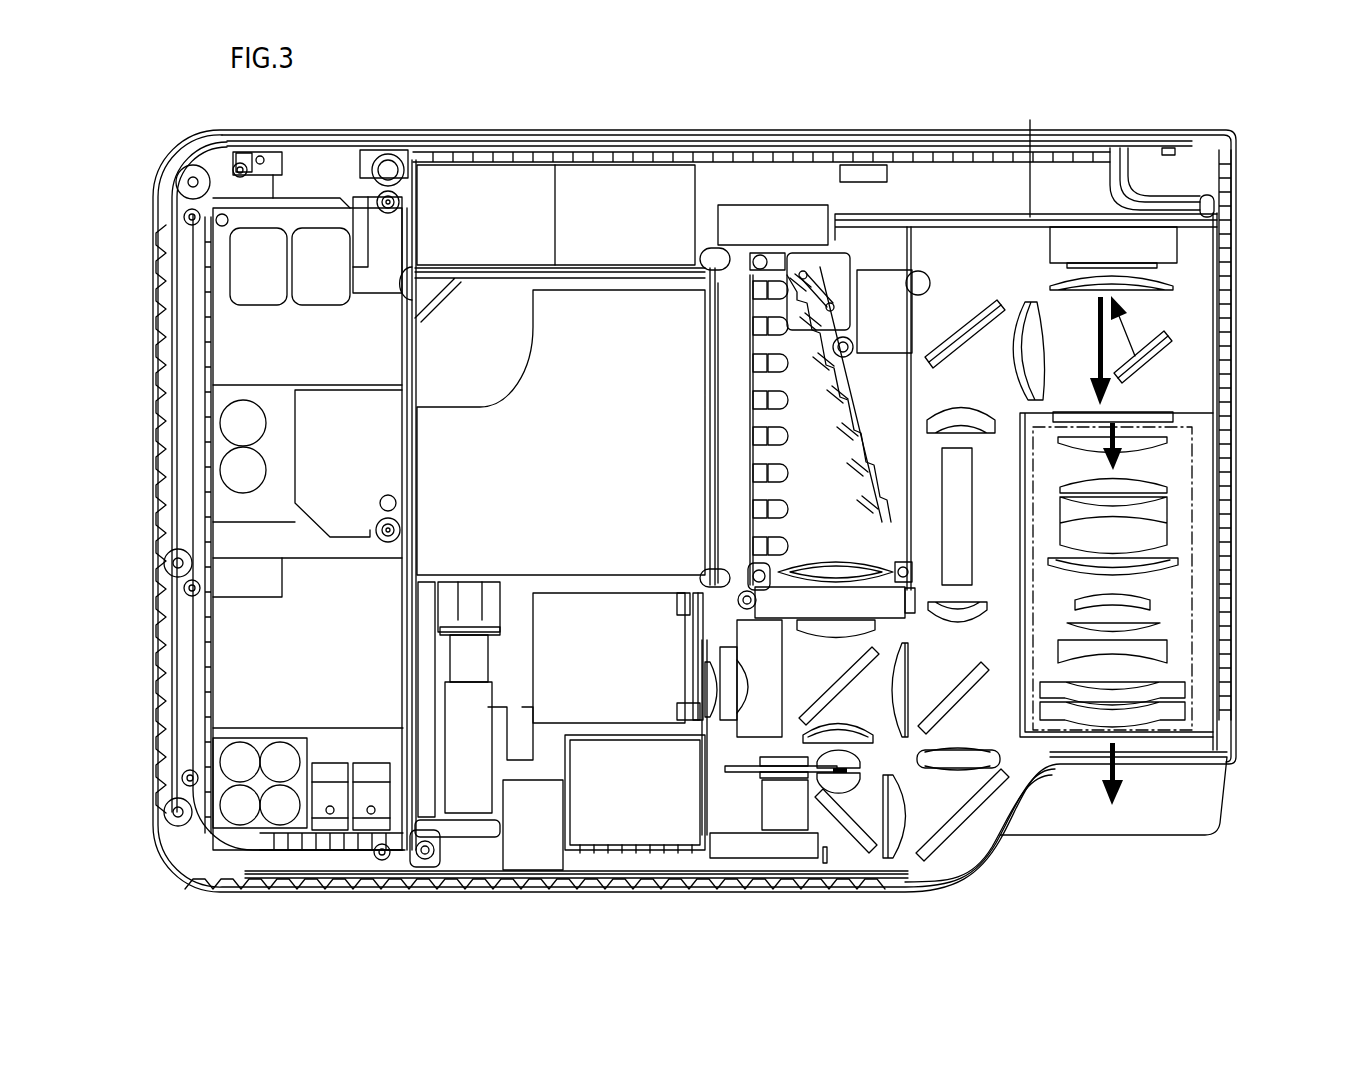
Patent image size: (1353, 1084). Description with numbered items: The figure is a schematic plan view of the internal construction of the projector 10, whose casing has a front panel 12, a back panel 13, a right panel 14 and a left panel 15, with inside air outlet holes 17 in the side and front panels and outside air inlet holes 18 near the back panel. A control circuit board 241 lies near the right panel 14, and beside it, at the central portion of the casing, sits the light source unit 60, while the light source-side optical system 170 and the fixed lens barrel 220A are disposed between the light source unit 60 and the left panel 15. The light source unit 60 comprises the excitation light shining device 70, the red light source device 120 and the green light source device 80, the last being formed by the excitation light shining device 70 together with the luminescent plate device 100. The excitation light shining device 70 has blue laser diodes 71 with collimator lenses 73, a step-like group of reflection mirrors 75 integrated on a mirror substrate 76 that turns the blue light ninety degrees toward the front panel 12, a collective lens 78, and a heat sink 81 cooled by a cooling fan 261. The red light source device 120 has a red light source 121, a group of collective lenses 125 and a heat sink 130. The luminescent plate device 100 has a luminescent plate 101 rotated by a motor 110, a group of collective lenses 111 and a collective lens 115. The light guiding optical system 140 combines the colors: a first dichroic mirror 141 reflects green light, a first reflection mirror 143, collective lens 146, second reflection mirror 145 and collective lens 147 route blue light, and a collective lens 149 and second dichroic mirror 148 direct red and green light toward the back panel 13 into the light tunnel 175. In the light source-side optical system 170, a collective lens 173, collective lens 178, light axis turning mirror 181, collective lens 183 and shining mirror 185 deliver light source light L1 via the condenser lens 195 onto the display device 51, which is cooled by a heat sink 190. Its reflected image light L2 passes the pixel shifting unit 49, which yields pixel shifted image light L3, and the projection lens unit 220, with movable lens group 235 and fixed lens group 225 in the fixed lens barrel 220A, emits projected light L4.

The projector 10 is at (1248, 115).
The front panel 12 is at (322, 893).
The back panel 13 is at (545, 141).
The right panel 14 is at (156, 370).
The left panel 15 is at (1236, 690).
The inside air outlet holes 17 is at (158, 412).
The outside air inlet holes 18 is at (500, 130).
The pixel shifting unit 49 is at (1170, 417).
The display device 51 is at (1157, 258).
The light source unit 60 is at (680, 484).
The excitation light shining device 70 is at (797, 341).
The blue laser diodes 71 is at (788, 402).
The collimator lenses 73 is at (788, 367).
The group of reflection mirrors 75 is at (843, 438).
The mirror substrate 76 is at (818, 314).
The collective lens 78 is at (828, 572).
The green light source device 80 is at (797, 504).
The heat sink 81 is at (600, 383).
The luminescent plate device 100 is at (778, 802).
The luminescent plate 101 is at (750, 772).
The motor 110 is at (783, 810).
The group of collective lenses 111 is at (960, 830).
The collective lens 115 is at (900, 840).
The red light source device 120 is at (686, 726).
The red light source 121 is at (703, 697).
The group of collective lenses 125 is at (720, 655).
The heat sink 130 is at (573, 670).
The light guiding optical system 140 is at (1035, 780).
The first dichroic mirror 141 is at (838, 688).
The first reflection mirror 143 is at (850, 800).
The second reflection mirror 145 is at (1010, 790).
The collective lens 146 is at (874, 758).
The collective lens 147 is at (955, 752).
The second dichroic mirror 148 is at (956, 692).
The collective lens 149 is at (965, 770).
The light source-side optical system 170 is at (984, 293).
The collective lens 173 is at (958, 618).
The light tunnel 175 is at (958, 573).
The collective lens 178 is at (960, 410).
The light axis turning mirror 181 is at (970, 312).
The collective lens 183 is at (1022, 305).
The shining mirror 185 is at (1160, 363).
The heat sink 190 is at (1072, 182).
The condenser lens 195 is at (1163, 278).
The projection lens unit 220 is at (1177, 682).
The fixed lens barrel 220A is at (1200, 497).
The fixed lens group 225 is at (1149, 730).
The movable lens group 235 is at (1184, 478).
The control circuit board 241 is at (285, 608).
The cooling fan 261 is at (440, 212).
The light source light L1 is at (1127, 332).
The image light L2 is at (1103, 350).
The pixel shifted image light L3 is at (1120, 443).
The projected light L4 is at (1120, 785).